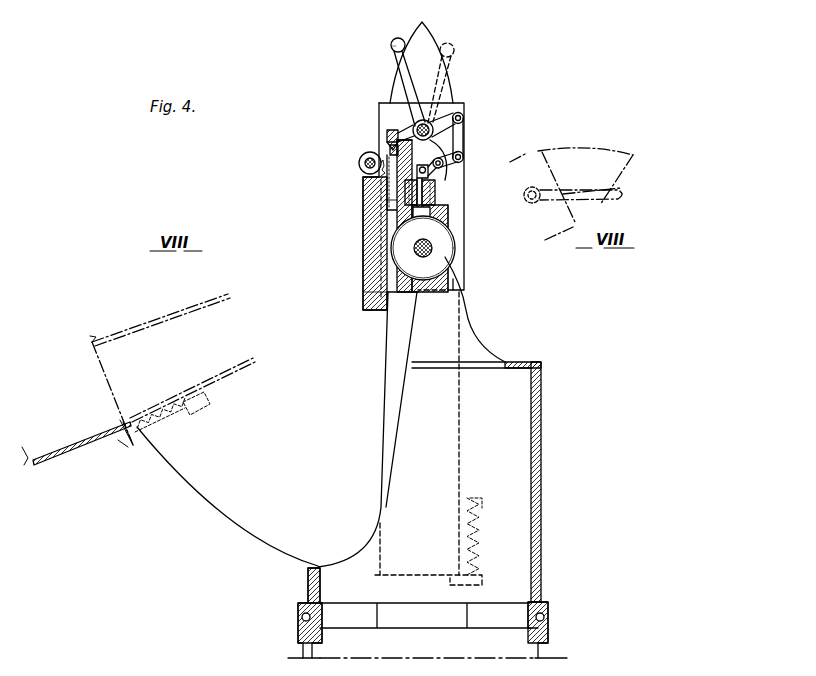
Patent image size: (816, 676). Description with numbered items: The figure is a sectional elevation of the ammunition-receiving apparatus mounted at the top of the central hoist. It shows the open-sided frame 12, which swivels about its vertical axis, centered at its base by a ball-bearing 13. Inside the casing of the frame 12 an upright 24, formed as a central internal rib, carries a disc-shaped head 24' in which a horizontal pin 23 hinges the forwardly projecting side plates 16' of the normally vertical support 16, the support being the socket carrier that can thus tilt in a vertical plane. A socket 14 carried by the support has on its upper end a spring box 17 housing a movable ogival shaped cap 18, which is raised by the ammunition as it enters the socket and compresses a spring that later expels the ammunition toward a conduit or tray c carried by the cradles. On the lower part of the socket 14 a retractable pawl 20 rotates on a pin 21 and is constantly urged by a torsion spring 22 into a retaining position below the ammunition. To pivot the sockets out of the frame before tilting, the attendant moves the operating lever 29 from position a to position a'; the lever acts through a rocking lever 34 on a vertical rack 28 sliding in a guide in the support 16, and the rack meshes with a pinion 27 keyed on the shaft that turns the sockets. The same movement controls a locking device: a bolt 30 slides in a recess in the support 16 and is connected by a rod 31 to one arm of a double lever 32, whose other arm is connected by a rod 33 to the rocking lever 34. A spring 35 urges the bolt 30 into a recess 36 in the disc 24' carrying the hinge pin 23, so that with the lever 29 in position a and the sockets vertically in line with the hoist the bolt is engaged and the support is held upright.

The frame 12 is at (542, 478).
The ball-bearing 13 is at (547, 617).
The socket 14 is at (392, 360).
The support 16 is at (372, 206).
The side plates 16' is at (460, 248).
The spring box 17 is at (465, 108).
The ogival shaped cap 18 is at (423, 43).
The retractable pawl 20 is at (448, 583).
The pin 21 is at (478, 532).
The torsion spring 22 is at (480, 552).
The horizontal pin 23 is at (433, 248).
The upright 24 is at (424, 429).
The disc-shaped head 24' is at (475, 309).
The pinion 27 is at (360, 162).
The vertical rack 28 is at (393, 136).
The operating lever 29 is at (408, 80).
The bolt 30 is at (432, 226).
The rod 31 is at (432, 195).
The double lever 32 is at (443, 166).
The rod 33 is at (458, 137).
The rocking lever 34 is at (440, 122).
The spring 35 is at (385, 201).
The recess 36 is at (391, 244).
The lever position a is at (379, 50).
The lever position a' is at (463, 82).
The conduit or tray c is at (80, 446).